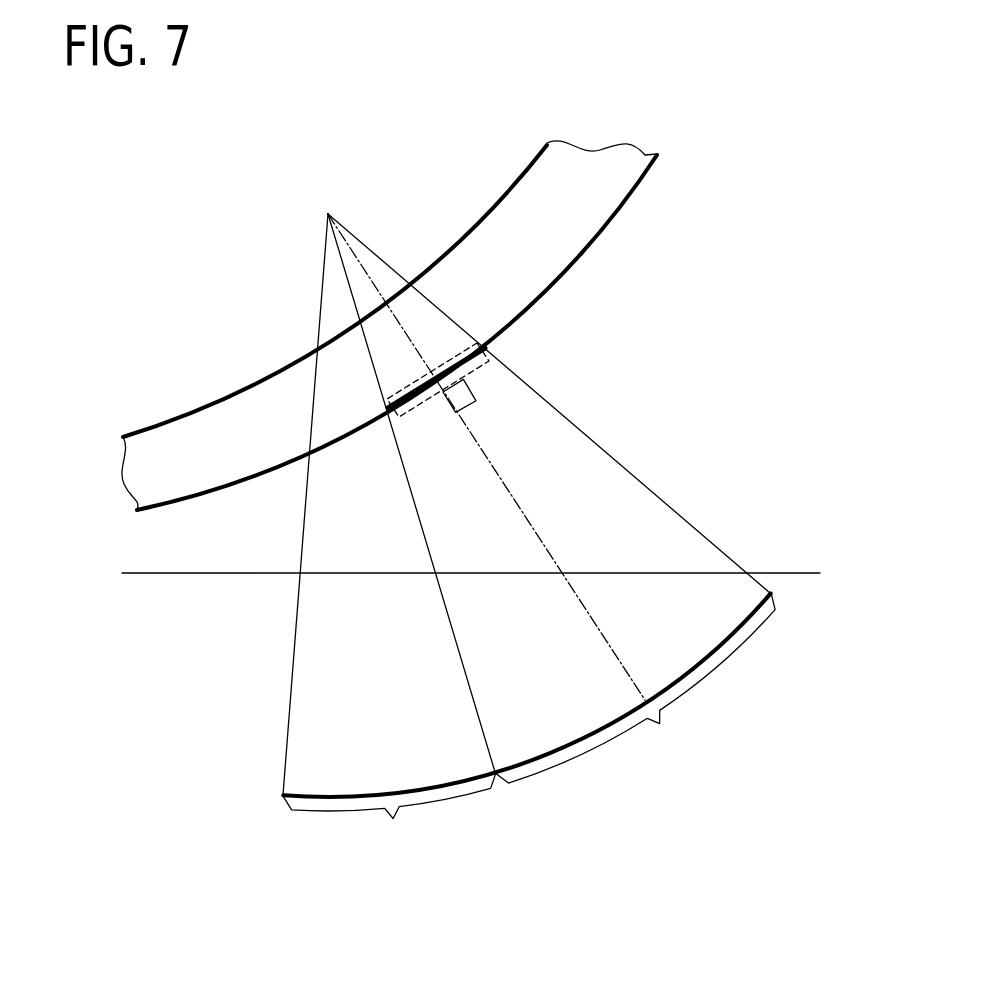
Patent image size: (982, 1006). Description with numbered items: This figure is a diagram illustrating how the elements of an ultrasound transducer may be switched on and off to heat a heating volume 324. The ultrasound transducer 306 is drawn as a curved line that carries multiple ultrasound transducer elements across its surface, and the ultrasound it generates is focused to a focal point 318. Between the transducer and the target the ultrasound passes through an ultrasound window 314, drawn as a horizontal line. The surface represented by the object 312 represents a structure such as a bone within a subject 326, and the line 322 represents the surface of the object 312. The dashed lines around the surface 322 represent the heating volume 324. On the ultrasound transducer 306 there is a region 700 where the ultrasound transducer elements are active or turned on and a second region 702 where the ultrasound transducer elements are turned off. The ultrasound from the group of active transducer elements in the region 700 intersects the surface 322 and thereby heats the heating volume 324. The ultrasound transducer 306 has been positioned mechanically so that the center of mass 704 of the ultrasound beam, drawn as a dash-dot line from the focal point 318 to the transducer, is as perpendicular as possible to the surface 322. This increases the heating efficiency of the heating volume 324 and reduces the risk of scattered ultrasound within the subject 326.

The ultrasound transducer 306 is at (332, 797).
The object 312 is at (180, 435).
The ultrasound window 314 is at (163, 575).
The focal point 318 is at (328, 214).
The surface of the object 322 is at (448, 357).
The heating volume 324 is at (503, 377).
The subject 326 is at (628, 282).
The region where the ultrasound transducer elements are active 700 is at (635, 688).
The second region where the ultrasound transducer elements are turned off 702 is at (389, 819).
The center of mass of the ultrasound beam 704 is at (518, 510).